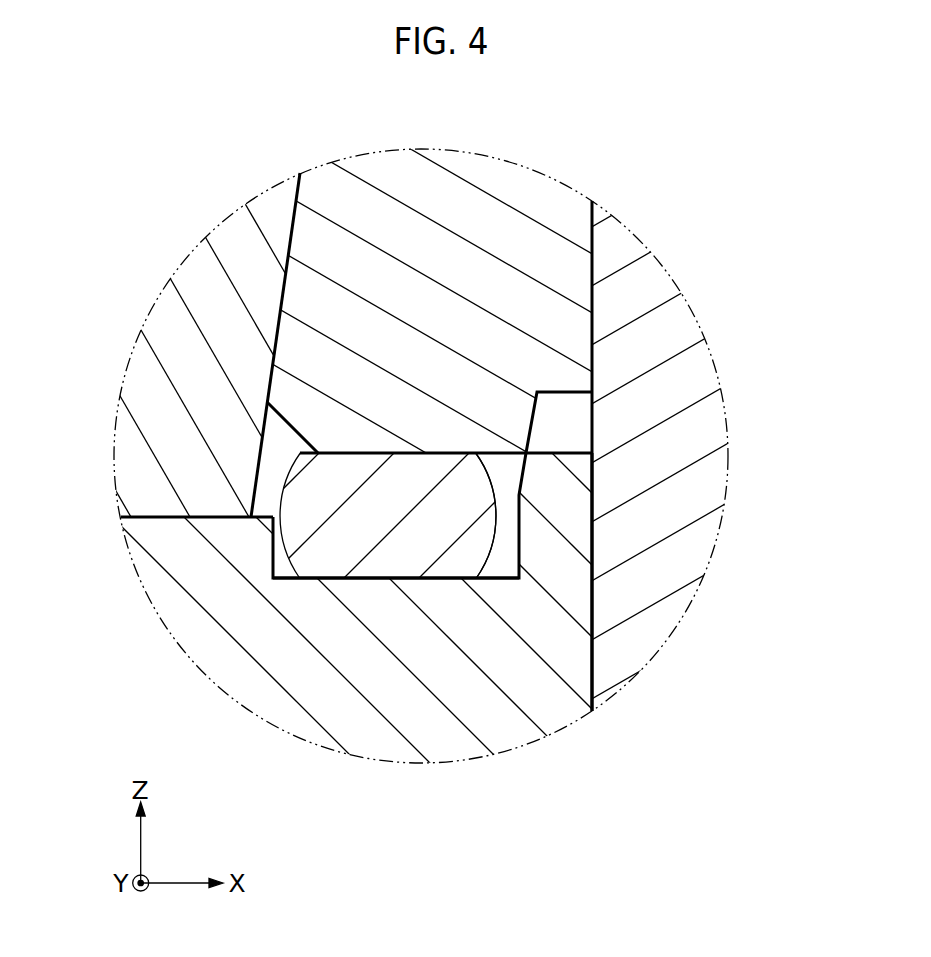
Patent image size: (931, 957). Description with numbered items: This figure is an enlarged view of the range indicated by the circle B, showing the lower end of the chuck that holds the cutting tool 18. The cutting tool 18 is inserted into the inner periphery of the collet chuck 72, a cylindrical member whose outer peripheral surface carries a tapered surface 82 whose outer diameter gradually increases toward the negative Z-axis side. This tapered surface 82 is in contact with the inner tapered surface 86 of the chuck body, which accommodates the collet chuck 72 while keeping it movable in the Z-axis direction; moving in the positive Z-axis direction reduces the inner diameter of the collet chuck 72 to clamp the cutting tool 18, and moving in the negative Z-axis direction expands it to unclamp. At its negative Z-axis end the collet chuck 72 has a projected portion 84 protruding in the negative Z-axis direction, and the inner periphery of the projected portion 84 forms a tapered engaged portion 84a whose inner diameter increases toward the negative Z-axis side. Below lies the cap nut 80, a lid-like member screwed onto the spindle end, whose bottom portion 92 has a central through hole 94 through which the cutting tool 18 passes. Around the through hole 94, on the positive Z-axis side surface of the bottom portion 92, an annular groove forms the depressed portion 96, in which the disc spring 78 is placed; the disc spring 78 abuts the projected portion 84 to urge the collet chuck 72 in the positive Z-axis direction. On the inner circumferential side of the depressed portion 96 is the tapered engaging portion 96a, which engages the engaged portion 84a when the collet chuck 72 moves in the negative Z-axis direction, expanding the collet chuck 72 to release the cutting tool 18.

The cutting tool 18 is at (643, 282).
The collet chuck 72 is at (404, 186).
The disc spring 78 is at (337, 556).
The cap nut 80 is at (218, 598).
The tapered surface 82 is at (291, 237).
The projected portion 84 is at (399, 402).
The engaged portion 84a is at (536, 421).
The inner tapered surface 86 is at (277, 337).
The bottom portion 92 is at (477, 695).
The through hole 94 is at (593, 537).
The depressed portion 96 is at (382, 577).
The engaging portion 96a is at (517, 473).
The circle B is at (557, 180).